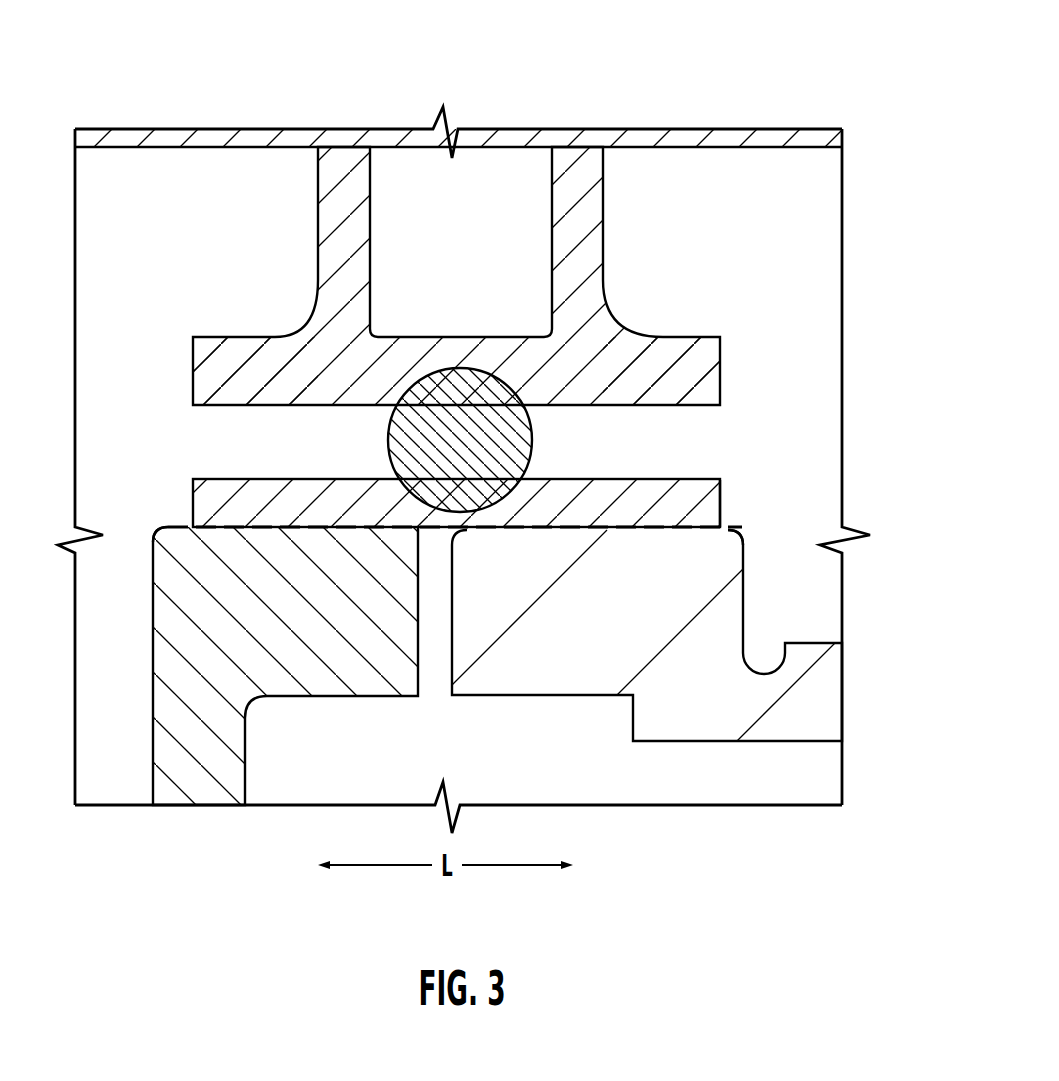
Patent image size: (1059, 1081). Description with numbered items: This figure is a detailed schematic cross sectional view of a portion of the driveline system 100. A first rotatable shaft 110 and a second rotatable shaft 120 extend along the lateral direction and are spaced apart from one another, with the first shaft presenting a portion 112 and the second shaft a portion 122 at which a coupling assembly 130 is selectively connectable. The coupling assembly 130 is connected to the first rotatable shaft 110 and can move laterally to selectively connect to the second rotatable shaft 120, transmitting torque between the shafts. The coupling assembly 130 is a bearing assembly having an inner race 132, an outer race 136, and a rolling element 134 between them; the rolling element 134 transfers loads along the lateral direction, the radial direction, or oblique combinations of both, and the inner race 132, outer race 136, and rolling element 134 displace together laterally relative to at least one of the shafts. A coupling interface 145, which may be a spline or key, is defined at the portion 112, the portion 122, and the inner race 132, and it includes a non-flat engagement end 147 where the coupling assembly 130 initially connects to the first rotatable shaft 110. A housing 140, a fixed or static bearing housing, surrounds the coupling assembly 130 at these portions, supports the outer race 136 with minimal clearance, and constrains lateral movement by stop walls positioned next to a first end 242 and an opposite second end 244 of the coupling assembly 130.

The driveline system 100 is at (728, 81).
The first rotatable shaft 110 is at (517, 670).
The portion of the first rotatable shaft 112 is at (676, 541).
The second rotatable shaft 120 is at (380, 698).
The portion of the second rotatable shaft 122 is at (162, 519).
The coupling assembly 130 is at (457, 337).
The inner race 132 is at (712, 492).
The rolling element 134 is at (517, 448).
The outer race 136 is at (628, 327).
The housing 140 is at (410, 133).
The coupling interface 145 is at (744, 521).
The engagement end 147 is at (735, 506).
The first end of the coupling assembly 242 is at (182, 367).
The second end of the coupling assembly 244 is at (731, 367).